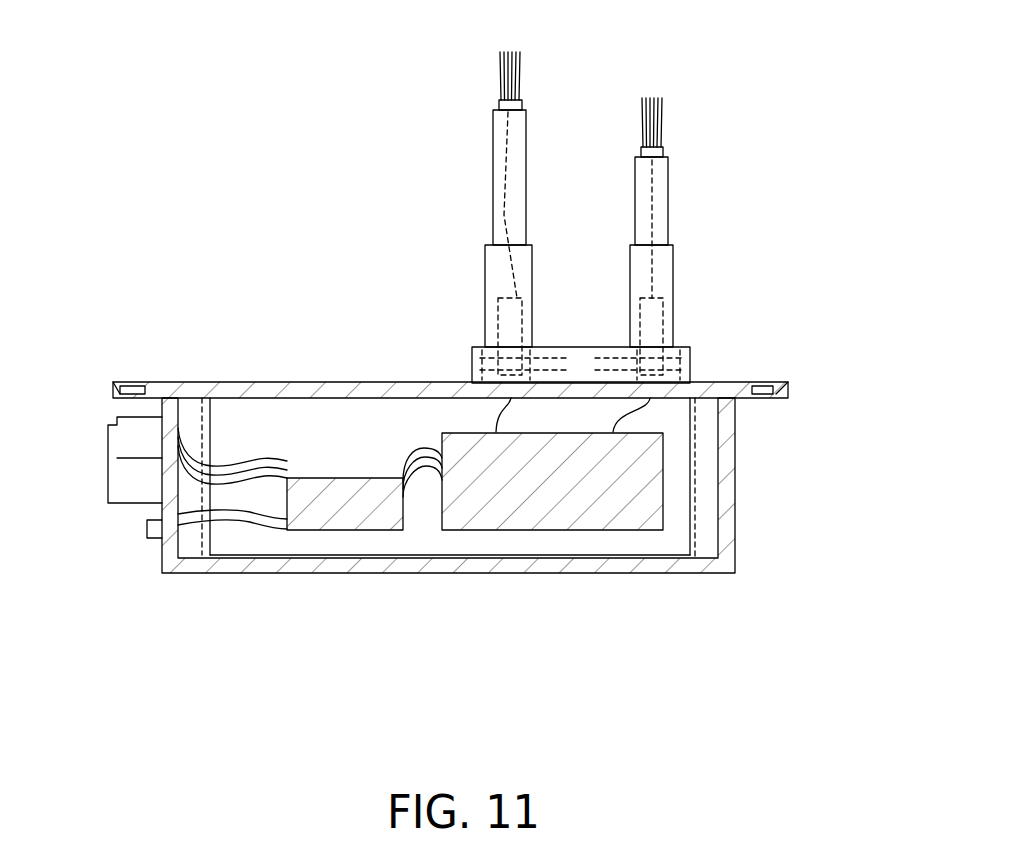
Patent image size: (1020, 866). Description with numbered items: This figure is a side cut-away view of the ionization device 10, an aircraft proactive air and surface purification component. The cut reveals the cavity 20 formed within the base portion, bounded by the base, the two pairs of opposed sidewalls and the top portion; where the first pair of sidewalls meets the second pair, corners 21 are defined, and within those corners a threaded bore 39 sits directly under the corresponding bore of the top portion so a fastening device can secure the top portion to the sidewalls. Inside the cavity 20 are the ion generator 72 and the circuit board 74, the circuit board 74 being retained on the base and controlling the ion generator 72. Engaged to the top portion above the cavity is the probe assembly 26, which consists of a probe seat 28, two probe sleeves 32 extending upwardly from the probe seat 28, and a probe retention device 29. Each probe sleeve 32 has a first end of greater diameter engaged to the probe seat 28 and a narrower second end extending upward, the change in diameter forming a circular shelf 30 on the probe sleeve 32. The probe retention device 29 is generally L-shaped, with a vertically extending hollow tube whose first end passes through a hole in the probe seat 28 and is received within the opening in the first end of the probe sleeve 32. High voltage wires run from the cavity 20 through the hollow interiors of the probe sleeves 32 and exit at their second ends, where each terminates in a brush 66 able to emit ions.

The ionization device 10 is at (114, 192).
The cavity 20 is at (285, 410).
The corners 21 is at (690, 348).
The probe assembly 26 is at (467, 280).
The probe seat 28 is at (575, 346).
The probe retention device 29 is at (662, 322).
The circular shelf 30 is at (673, 245).
The probe sleeve 32 is at (667, 207).
The threaded bore 39 is at (495, 398).
The brush 66 is at (665, 120).
The ion generator 72 is at (607, 513).
The circuit board 74 is at (355, 515).